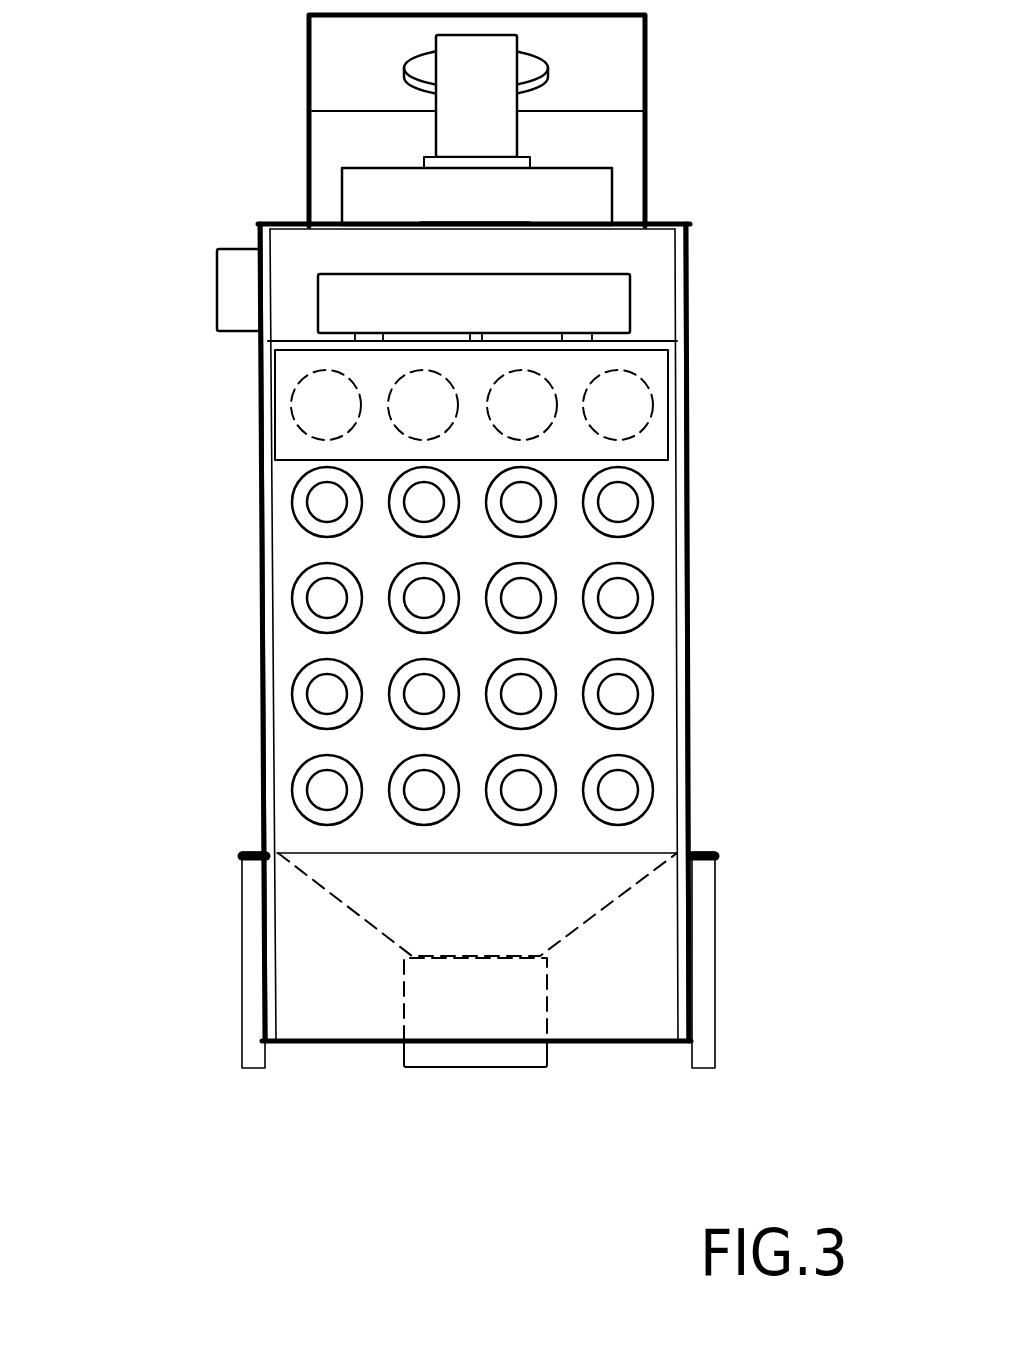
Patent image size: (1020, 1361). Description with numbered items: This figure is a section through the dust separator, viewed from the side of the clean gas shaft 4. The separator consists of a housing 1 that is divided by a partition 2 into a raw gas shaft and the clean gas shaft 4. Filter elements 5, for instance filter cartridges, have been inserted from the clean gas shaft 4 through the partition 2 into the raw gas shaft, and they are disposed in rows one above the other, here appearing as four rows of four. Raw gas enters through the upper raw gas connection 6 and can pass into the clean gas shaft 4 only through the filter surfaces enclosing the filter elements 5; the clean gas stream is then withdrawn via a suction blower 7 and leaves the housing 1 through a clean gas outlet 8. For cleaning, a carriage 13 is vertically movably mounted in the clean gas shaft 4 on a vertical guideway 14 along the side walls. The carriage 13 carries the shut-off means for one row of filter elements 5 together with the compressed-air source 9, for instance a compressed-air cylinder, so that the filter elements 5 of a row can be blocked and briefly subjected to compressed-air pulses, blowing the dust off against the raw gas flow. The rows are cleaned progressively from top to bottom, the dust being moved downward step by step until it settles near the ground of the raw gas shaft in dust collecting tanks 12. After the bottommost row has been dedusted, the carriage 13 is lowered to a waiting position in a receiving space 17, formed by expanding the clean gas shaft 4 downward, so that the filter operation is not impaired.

The housing 1 is at (696, 604).
The partition 2 is at (655, 737).
The clean gas shaft 4 is at (318, 744).
The filter elements 5 is at (298, 585).
The raw gas connection 6 is at (228, 278).
The suction blower 7 is at (572, 188).
The clean gas outlet 8 is at (527, 62).
The compressed-air source 9 is at (596, 296).
The dust collecting tanks 12 is at (470, 1053).
The carriage 13 is at (648, 438).
The vertical guideway 14 is at (272, 665).
The receiving space 17 is at (637, 977).